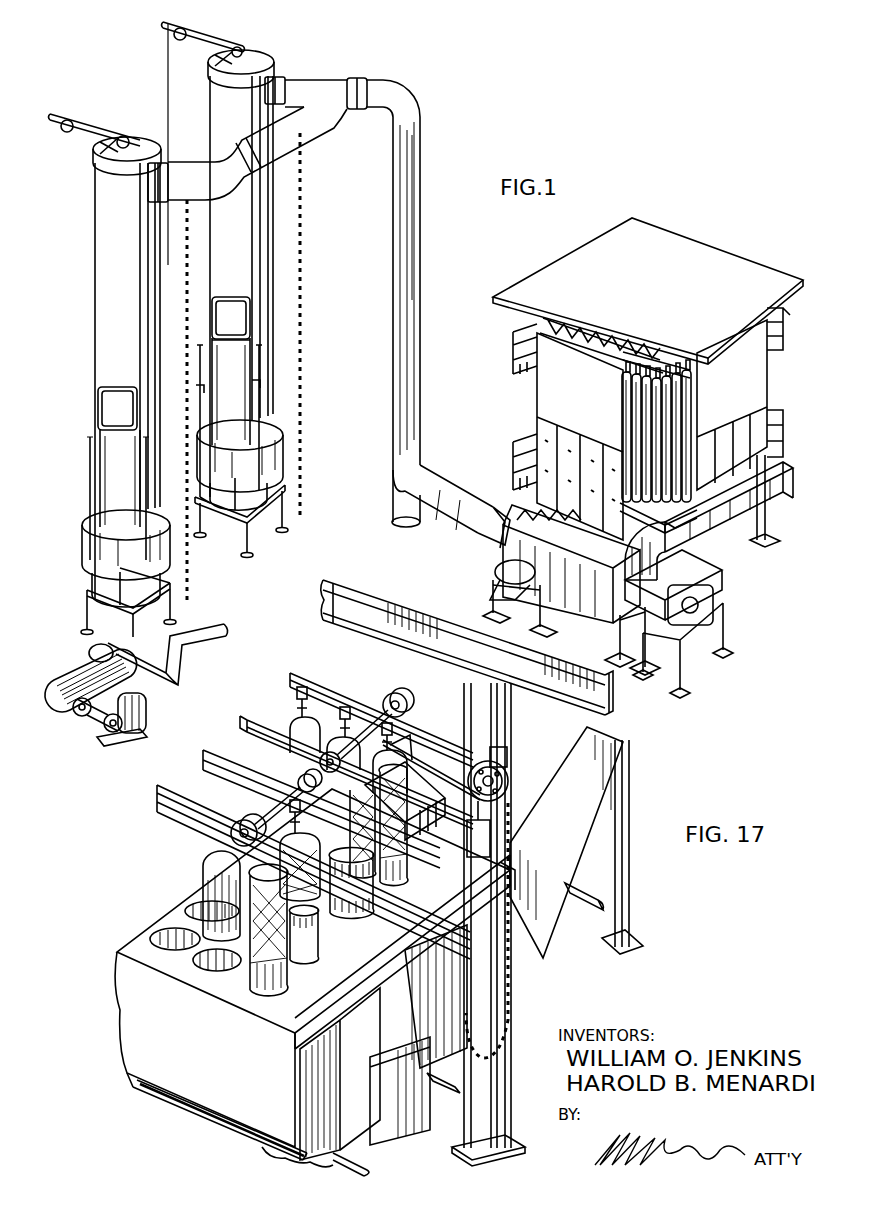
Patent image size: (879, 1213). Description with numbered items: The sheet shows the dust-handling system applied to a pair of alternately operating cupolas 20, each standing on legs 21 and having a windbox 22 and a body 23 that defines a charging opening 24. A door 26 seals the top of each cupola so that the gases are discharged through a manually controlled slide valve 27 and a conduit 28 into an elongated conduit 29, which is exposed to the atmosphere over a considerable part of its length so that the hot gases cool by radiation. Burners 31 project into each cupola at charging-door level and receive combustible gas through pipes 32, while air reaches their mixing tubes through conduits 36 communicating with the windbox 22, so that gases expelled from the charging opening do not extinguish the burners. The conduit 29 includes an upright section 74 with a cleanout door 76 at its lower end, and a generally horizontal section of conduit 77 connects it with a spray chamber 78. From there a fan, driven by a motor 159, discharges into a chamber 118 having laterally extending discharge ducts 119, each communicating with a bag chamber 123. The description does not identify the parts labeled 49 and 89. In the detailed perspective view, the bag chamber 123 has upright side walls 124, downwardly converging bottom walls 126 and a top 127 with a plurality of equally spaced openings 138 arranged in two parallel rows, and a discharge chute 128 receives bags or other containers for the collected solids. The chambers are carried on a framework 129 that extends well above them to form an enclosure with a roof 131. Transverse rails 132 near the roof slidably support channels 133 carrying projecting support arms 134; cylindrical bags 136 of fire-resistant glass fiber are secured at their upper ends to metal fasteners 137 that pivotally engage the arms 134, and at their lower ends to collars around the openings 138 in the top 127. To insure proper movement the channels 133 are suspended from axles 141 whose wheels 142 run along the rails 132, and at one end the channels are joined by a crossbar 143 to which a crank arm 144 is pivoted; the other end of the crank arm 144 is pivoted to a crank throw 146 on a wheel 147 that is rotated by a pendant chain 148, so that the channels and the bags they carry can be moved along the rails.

In FIG. 1, the cupola 20 is at (258, 237).
In FIG. 1, the legs 21 is at (277, 490).
In FIG. 1, the windbox 22 is at (280, 440).
In FIG. 1, the body 23 is at (275, 287).
In FIG. 1, the charging opening 24 is at (236, 316).
In FIG. 1, the door 26 is at (257, 58).
In FIG. 1, the manually controlled slide valve 27 is at (283, 78).
In FIG. 1, the conduit 28 is at (298, 83).
In FIG. 1, the elongated conduit 29 is at (420, 203).
In FIG. 1, the burner 31 is at (213, 338).
In FIG. 1, the pipes 32 is at (260, 398).
In FIG. 1, the conduit 36 is at (132, 465).
In FIG. 1, the cable 49 is at (167, 87).
In FIG. 1, the upright section 74 is at (421, 357).
In FIG. 1, the cleanout door 76 is at (397, 530).
In FIG. 1, the horizontal section of conduit 77 is at (445, 495).
In FIG. 1, the spray chamber 78 is at (605, 557).
In FIG. 1, the motor 89 is at (505, 592).
In FIG. 1, the chamber 118 is at (723, 537).
In FIG. 1, the discharge ducts 119 is at (763, 467).
In FIG. 1, the bag chamber 123 is at (703, 553).
In FIG. 17, the bag chamber 123 is at (246, 1083).
In FIG. 17, the upright side walls 124 is at (130, 985).
In FIG. 17, the downwardly converging bottom walls 126 is at (400, 1070).
In FIG. 17, the top 127 is at (173, 913).
In FIG. 17, the discharge chute 128 is at (390, 1100).
In FIG. 17, the framework 129 is at (498, 1083).
In FIG. 1, the roof 131 is at (666, 308).
In FIG. 17, the transverse rails 132 is at (455, 682).
In FIG. 17, the channels 133 is at (213, 750).
In FIG. 17, the support arms 134 is at (297, 673).
In FIG. 1, the cylindrical bags 136 is at (672, 397).
In FIG. 17, the cylindrical bags 136 is at (240, 892).
In FIG. 17, the metal fasteners 137 is at (345, 737).
In FIG. 17, the openings 138 is at (237, 975).
In FIG. 17, the axles 141 is at (272, 803).
In FIG. 17, the wheels 142 is at (232, 836).
In FIG. 17, the crossbar 143 is at (391, 741).
In FIG. 17, the crank arm 144 is at (432, 782).
In FIG. 17, the crank throw 146 is at (508, 778).
In FIG. 17, the wheel 147 is at (493, 758).
In FIG. 17, the pendant chain 148 is at (522, 1022).
In FIG. 1, the motor 159 is at (713, 593).